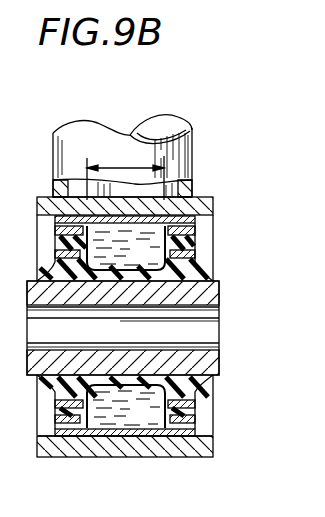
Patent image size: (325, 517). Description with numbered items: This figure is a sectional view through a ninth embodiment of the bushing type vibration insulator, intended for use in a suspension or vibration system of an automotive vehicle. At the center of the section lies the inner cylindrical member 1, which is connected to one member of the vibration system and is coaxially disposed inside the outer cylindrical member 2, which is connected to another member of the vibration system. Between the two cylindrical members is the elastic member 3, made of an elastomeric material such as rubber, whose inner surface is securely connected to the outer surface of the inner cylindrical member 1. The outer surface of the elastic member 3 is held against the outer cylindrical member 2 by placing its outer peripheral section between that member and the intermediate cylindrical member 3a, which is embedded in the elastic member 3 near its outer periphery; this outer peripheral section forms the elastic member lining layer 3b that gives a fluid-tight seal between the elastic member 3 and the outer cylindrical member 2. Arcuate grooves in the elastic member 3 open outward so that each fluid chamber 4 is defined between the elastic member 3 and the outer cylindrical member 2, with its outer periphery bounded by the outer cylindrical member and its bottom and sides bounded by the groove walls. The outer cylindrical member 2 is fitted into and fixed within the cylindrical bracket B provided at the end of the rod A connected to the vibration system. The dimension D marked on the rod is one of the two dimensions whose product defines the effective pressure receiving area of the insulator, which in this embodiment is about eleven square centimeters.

The rod A is at (192, 152).
The cylindrical bracket B is at (139, 459).
The effective pressure receiving area dimension D is at (125, 173).
The inner cylindrical member 1 is at (36, 358).
The outer cylindrical member 2 is at (78, 447).
The elastic member 3 is at (196, 388).
The intermediate cylindrical member 3a is at (56, 232).
The elastic member lining layer 3b is at (53, 213).
The fluid chamber 4 is at (126, 248).